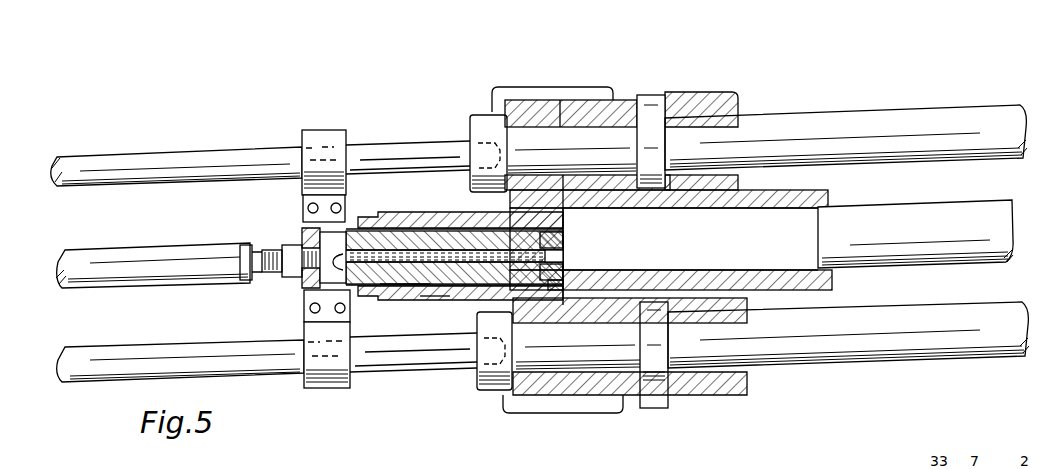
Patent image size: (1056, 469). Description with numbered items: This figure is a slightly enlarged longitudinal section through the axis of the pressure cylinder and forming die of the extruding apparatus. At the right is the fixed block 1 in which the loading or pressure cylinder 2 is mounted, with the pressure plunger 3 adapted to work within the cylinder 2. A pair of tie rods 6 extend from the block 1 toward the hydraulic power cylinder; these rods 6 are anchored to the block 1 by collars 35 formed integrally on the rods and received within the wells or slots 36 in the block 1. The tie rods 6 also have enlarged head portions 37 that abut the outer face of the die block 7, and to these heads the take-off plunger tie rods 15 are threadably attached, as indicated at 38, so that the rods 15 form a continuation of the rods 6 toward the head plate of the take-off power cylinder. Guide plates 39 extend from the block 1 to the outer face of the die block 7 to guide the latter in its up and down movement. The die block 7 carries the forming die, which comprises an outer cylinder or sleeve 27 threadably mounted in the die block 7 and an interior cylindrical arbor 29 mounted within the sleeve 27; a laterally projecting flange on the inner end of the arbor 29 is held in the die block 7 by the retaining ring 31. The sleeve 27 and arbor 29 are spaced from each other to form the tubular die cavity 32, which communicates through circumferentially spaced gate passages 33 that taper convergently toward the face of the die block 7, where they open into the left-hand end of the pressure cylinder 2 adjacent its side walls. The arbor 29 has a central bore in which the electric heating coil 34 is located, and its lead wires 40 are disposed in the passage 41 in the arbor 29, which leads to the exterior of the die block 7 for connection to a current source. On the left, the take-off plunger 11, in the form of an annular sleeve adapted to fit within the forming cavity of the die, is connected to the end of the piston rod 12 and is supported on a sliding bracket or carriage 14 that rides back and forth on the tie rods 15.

The fixed block 1 is at (736, 373).
The pressure cylinder 2 is at (826, 191).
The pressure plunger 3 is at (908, 248).
The tie rods 6 is at (845, 125).
The die block 7 is at (543, 108).
The take-off plunger 11 is at (397, 226).
The piston rod 12 is at (190, 270).
The sliding bracket or carriage 14 is at (330, 141).
The tie rods 15 is at (378, 153).
The outer cylinder or sleeve 27 is at (432, 218).
The cylindrical arbor 29 is at (373, 213).
The retaining ring 31 is at (576, 290).
The tubular die cavity 32 is at (567, 238).
The gate passages 33 is at (565, 216).
The heating coil 34 is at (403, 284).
The collars 35 is at (655, 127).
The wells or slots 36 is at (652, 96).
The enlarged head portions 37 is at (484, 122).
The threaded attachment 38 is at (468, 138).
The guide plates 39 is at (523, 93).
The lead wires 40 is at (340, 258).
The passage 41 is at (435, 289).